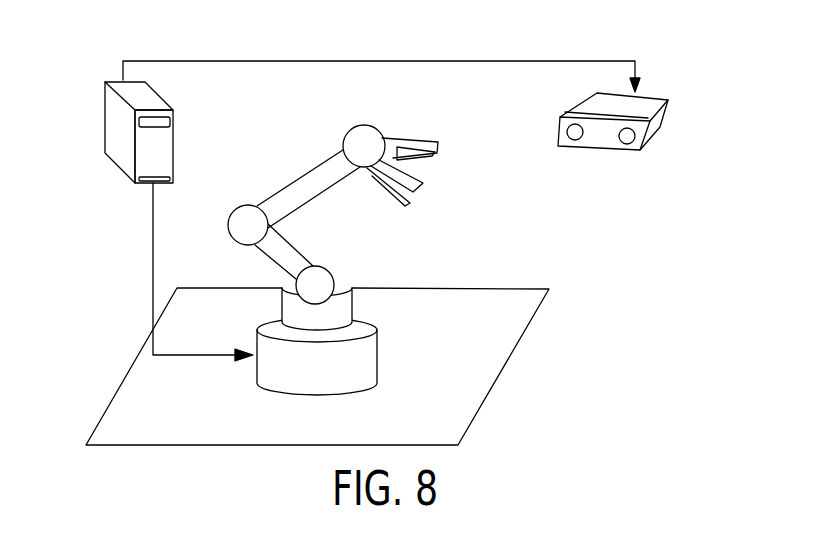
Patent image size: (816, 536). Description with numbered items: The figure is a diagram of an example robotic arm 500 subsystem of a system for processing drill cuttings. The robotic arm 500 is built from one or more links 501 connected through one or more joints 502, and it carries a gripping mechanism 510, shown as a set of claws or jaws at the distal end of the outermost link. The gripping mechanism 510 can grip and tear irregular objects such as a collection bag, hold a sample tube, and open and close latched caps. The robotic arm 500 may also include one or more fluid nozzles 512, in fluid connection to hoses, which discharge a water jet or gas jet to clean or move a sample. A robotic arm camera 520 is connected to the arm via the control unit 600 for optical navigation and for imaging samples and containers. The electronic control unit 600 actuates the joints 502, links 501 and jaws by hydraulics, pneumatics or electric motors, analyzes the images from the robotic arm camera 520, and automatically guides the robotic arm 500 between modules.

The robotic arm 500 is at (360, 76).
The links 501 is at (355, 140).
The joints 502 is at (300, 192).
The gripping mechanism 510 is at (408, 142).
The fluid nozzles 512 is at (412, 200).
The robotic arm camera 520 is at (647, 120).
The control unit 600 is at (125, 128).